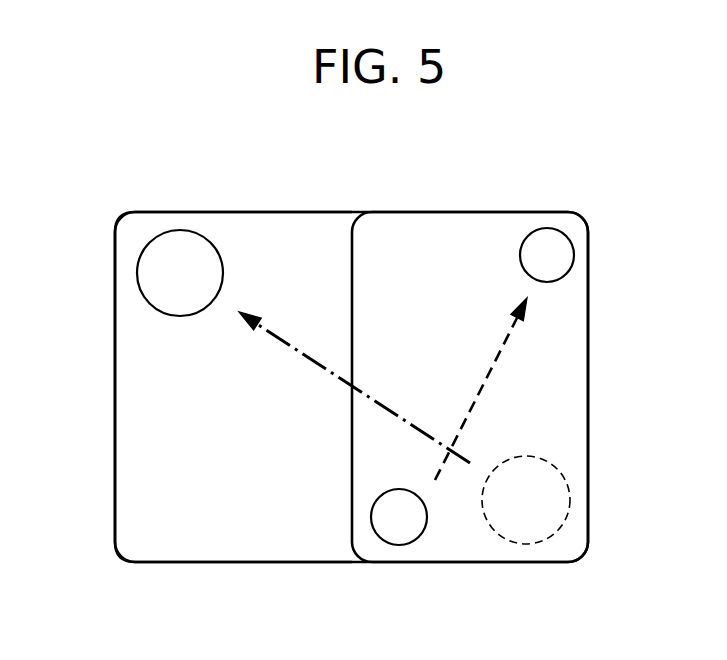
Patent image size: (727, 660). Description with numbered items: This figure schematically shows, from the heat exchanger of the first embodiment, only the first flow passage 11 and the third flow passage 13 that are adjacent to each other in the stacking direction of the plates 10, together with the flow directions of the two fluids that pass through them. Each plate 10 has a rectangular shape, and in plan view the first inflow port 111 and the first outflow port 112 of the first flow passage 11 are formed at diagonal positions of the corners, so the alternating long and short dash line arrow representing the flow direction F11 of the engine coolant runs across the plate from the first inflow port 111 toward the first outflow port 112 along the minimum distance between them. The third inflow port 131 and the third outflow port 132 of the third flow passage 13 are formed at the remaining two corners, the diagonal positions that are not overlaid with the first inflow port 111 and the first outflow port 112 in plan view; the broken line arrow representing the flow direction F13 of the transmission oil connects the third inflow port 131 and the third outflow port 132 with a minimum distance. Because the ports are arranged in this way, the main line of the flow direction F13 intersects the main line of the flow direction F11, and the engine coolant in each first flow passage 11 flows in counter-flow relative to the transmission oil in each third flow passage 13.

The plate 10 is at (246, 212).
The first flow passage 11 is at (125, 402).
The third flow passage 13 is at (577, 410).
The first outflow port 112 is at (162, 236).
The third outflow port 132 is at (548, 238).
The third inflow port 131 is at (394, 545).
The first inflow port 111 is at (553, 534).
The flow direction of the engine coolant F11 is at (322, 363).
The flow direction of the T/M oil F13 is at (498, 360).